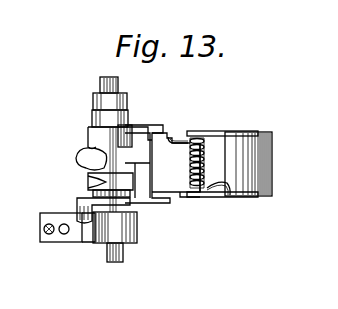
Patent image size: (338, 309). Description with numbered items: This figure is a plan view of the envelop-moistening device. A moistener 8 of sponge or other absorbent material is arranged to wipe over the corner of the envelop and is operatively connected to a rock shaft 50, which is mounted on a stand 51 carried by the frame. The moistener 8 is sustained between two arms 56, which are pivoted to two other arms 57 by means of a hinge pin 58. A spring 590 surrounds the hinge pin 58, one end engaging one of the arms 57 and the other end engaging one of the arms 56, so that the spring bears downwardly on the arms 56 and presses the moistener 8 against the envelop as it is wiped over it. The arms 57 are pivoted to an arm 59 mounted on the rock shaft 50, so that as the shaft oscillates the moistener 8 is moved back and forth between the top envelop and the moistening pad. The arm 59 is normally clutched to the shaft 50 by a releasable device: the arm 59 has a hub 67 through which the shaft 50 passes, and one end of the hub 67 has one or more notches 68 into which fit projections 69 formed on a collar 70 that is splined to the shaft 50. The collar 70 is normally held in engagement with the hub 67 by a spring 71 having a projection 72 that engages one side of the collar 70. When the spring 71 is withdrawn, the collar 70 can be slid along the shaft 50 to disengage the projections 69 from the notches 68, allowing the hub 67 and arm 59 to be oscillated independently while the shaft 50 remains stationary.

The moistener 8 is at (272, 187).
The rock shaft 50 is at (106, 77).
The stand 51 is at (93, 96).
The arms 56 is at (212, 152).
The arms 57 is at (182, 130).
The hinge pin 58 is at (190, 164).
The arm 59 is at (136, 152).
The spring 590 is at (226, 135).
The hub 67 is at (92, 127).
The notches 68 is at (78, 158).
The projections 69 is at (93, 193).
The collar 70 is at (113, 215).
The spring 71 is at (77, 199).
The projection 72 is at (96, 226).